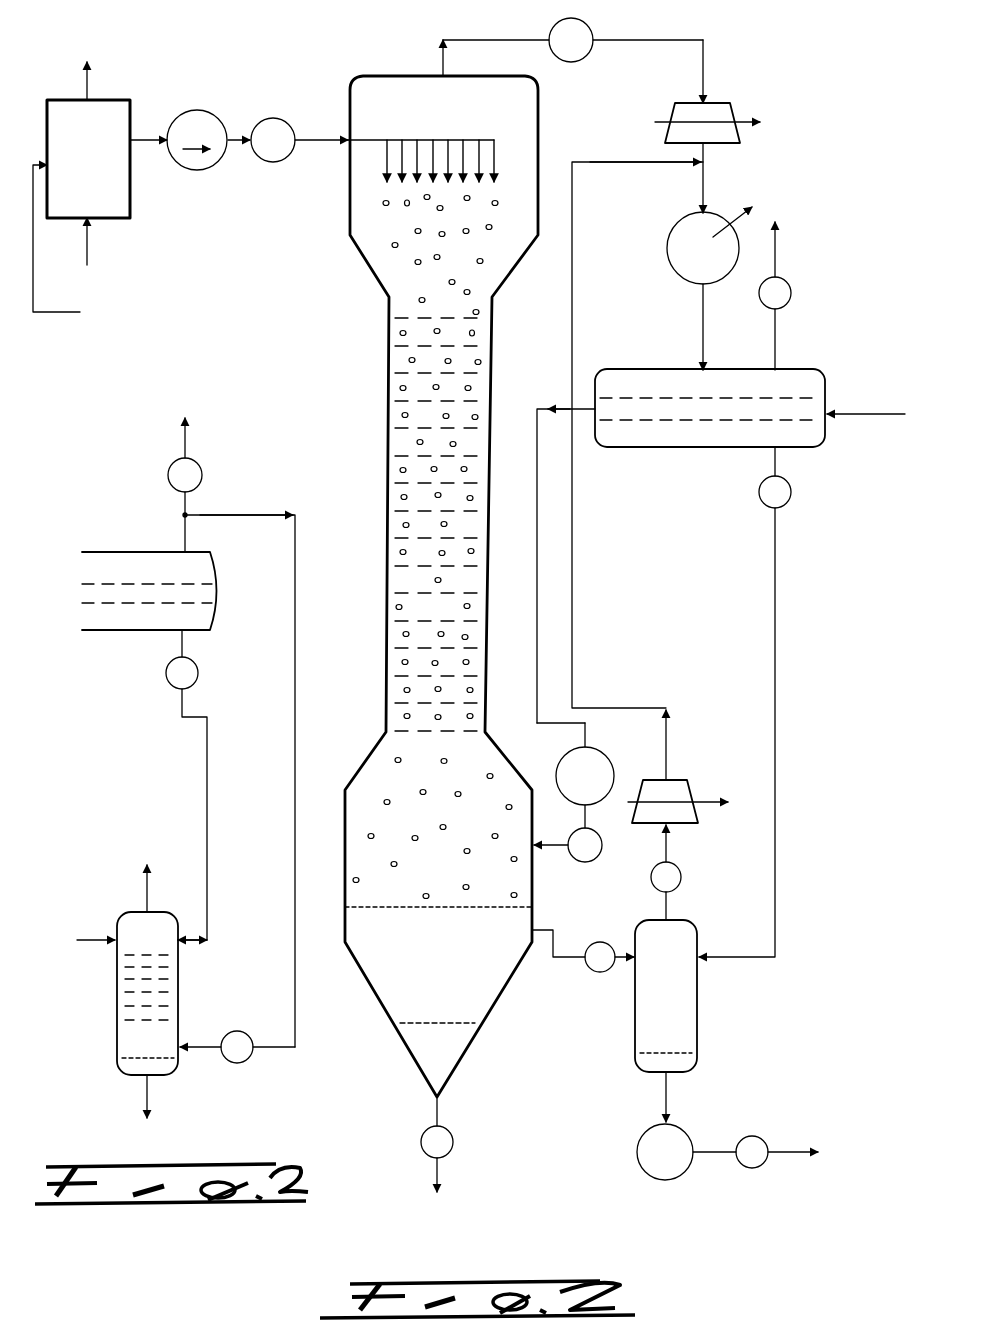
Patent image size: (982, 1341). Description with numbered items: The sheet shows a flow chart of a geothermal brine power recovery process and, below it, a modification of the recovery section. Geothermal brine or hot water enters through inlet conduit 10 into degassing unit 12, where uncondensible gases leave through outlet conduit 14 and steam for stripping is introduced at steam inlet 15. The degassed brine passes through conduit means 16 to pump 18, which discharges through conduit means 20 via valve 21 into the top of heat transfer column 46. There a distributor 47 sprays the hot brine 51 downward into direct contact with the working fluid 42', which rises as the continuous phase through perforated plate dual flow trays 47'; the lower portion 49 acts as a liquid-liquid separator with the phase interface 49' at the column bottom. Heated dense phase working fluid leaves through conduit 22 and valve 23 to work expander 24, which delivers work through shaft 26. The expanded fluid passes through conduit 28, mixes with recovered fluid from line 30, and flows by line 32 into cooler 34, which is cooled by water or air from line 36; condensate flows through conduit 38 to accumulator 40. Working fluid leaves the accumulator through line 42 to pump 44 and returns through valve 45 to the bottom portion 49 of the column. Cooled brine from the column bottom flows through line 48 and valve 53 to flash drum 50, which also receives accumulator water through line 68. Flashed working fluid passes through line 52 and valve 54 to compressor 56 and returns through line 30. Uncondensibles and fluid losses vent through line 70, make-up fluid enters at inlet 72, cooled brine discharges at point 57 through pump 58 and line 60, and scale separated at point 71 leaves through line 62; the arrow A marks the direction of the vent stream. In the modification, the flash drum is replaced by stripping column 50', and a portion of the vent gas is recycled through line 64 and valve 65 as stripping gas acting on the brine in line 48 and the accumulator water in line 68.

In FIG. 1, the inlet conduit 10 is at (33, 288).
In FIG. 1, the degassing unit 12 is at (131, 205).
In FIG. 1, the outlet conduit 14 is at (87, 85).
In FIG. 1, the steam inlet 15 is at (87, 258).
In FIG. 1, the conduit means 16 is at (143, 137).
In FIG. 1, the pump 18 is at (209, 110).
In FIG. 1, the conduit means 20 is at (240, 133).
In FIG. 1, the valve 21 is at (292, 120).
In FIG. 1, the conduit 22 is at (500, 42).
In FIG. 1, the valve 23 is at (593, 28).
In FIG. 1, the work expander 24 is at (678, 108).
In FIG. 1, the shaft 26 is at (745, 128).
In FIG. 1, the conduit 28 is at (705, 152).
In FIG. 1, the line 30 is at (618, 160).
In FIG. 1, the line 32 is at (703, 185).
In FIG. 1, the cooler 34 is at (667, 248).
In FIG. 1, the line 36 is at (683, 263).
In FIG. 1, the conduit 38 is at (701, 343).
In FIG. 1, the accumulator 40 is at (612, 450).
In FIG. 2, the accumulator 40 is at (214, 628).
In FIG. 1, the line 42 is at (546, 566).
In FIG. 1, the working fluid 42' is at (519, 763).
In FIG. 1, the pump 44 is at (598, 757).
In FIG. 1, the valve 45 is at (600, 846).
In FIG. 1, the heat transfer column 46 is at (387, 392).
In FIG. 1, the distributor 47 is at (461, 138).
In FIG. 1, the perforated plate dual flow trays 47' is at (407, 524).
In FIG. 1, the line 48 is at (565, 958).
In FIG. 2, the line 48 is at (85, 940).
In FIG. 1, the lower portion of the heat transfer column 49 is at (463, 829).
In FIG. 2, the lower portion of the heat transfer column 49 is at (251, 932).
In FIG. 1, the interface 49' is at (416, 924).
In FIG. 1, the flash drum 50 is at (706, 996).
In FIG. 2, the stripping column 50' is at (169, 1015).
In FIG. 1, the brine or hot water 51 is at (420, 262).
In FIG. 1, the line 52 is at (668, 906).
In FIG. 2, the line 52 is at (147, 890).
In FIG. 1, the valve 53 is at (602, 942).
In FIG. 1, the valve 54 is at (680, 869).
In FIG. 1, the compressor 56 is at (700, 816).
In FIG. 1, the discharge point 57 is at (668, 1093).
In FIG. 1, the pump 58 is at (637, 1152).
In FIG. 1, the line 60 is at (783, 1154).
In FIG. 1, the line 62 is at (437, 1170).
In FIG. 2, the line 64 is at (297, 624).
In FIG. 2, the valve 65 is at (240, 1063).
In FIG. 1, the line 68 is at (777, 592).
In FIG. 2, the line 68 is at (207, 792).
In FIG. 1, the line 70 is at (775, 336).
In FIG. 2, the line 70 is at (190, 498).
In FIG. 1, the scale separation point 71 is at (443, 1068).
In FIG. 1, the make-up working fluid inlet 72 is at (868, 416).
In FIG. 1, the direction arrow A is at (919, 92).